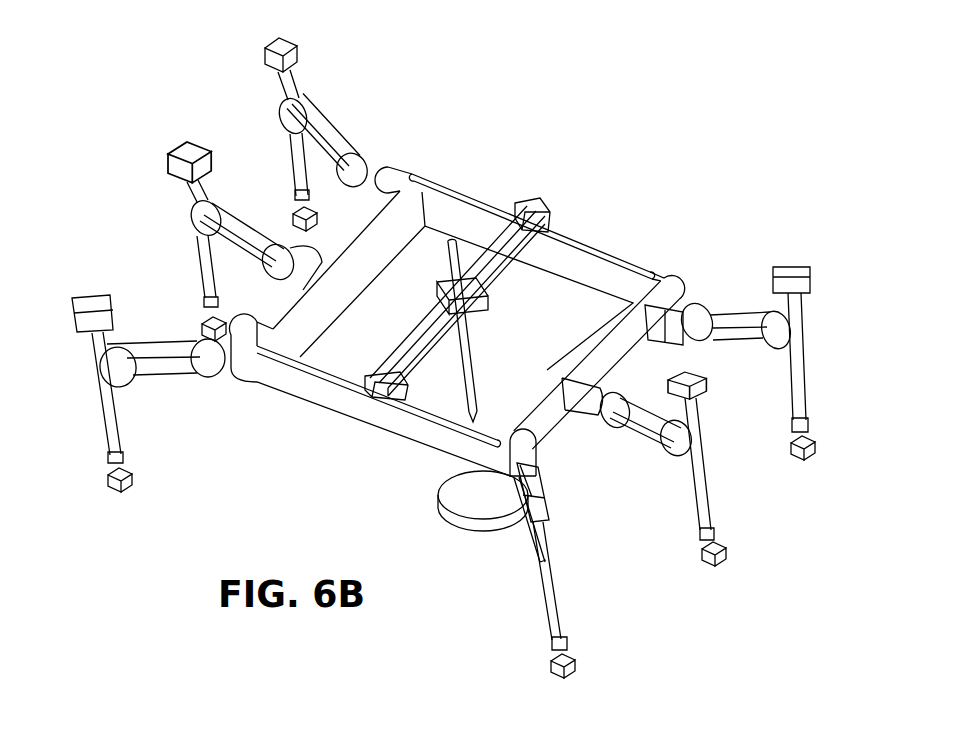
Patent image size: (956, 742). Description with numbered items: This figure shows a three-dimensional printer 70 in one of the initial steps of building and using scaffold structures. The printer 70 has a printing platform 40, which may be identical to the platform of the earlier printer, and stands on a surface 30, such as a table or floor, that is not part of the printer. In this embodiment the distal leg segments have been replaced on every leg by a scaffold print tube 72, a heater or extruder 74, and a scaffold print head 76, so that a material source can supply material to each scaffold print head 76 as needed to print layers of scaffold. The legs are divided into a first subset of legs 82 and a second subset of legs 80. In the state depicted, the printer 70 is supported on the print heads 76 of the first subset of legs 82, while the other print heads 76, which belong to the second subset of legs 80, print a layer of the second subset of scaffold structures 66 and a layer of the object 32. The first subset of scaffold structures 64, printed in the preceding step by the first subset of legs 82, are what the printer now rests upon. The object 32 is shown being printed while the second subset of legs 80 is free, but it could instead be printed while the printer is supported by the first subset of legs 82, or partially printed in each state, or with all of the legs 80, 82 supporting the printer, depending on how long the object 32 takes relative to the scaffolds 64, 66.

The surface 30 is at (288, 474).
The object 32 is at (452, 525).
The printing platform 40 is at (585, 192).
The first subset of scaffold structures 64 is at (277, 222).
The second subset of scaffold structures 66 is at (205, 323).
The three-dimensional printer 70 is at (490, 125).
The scaffold print tube 72 is at (100, 405).
The heater or extruder 74 is at (90, 297).
The scaffold print head 76 is at (112, 478).
The second subset of legs 80 is at (240, 247).
The first subset of legs 82 is at (332, 125).